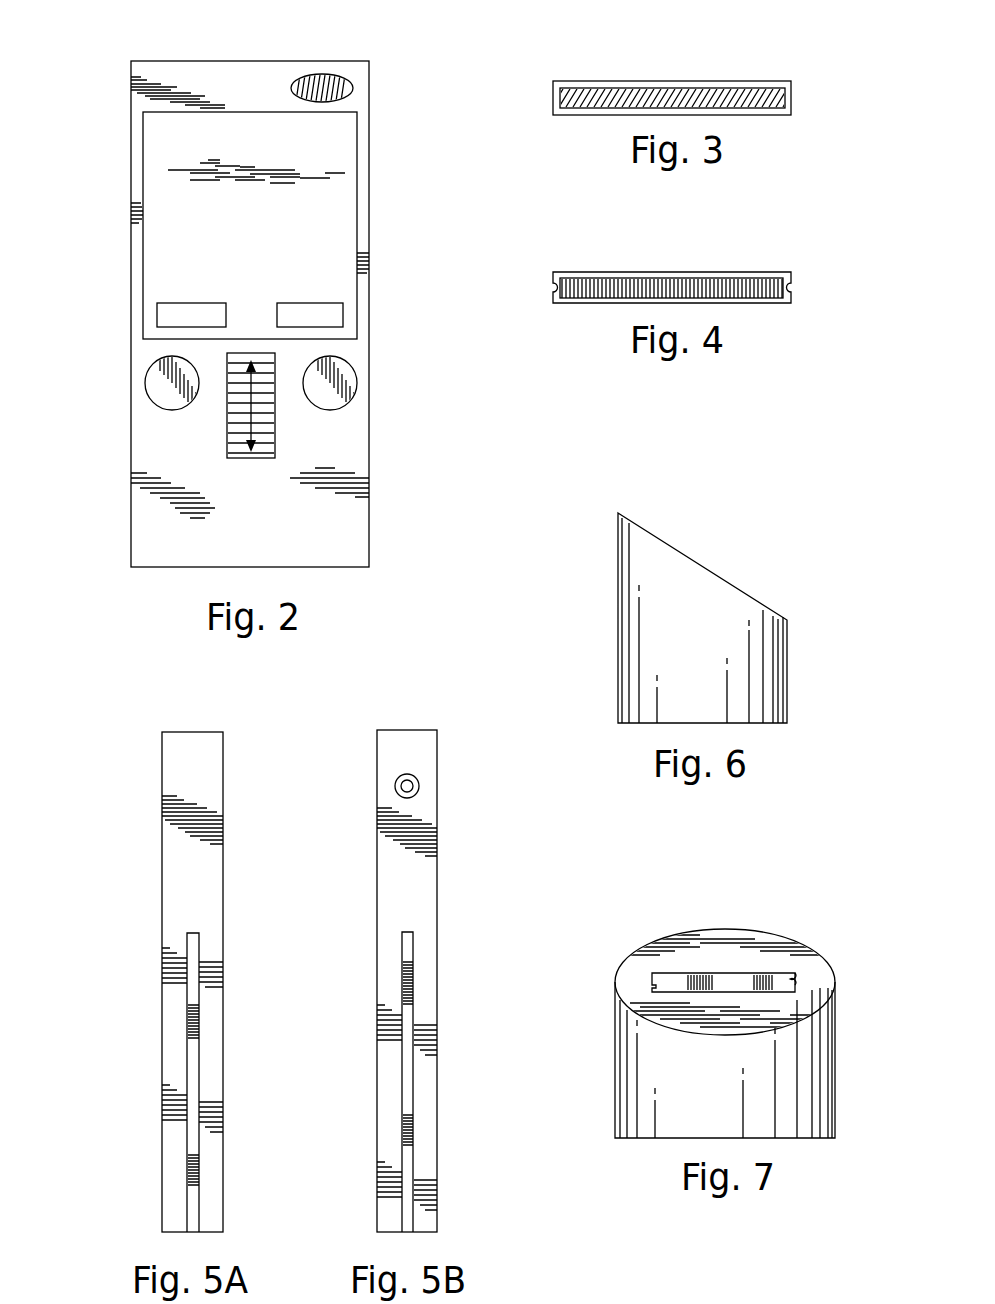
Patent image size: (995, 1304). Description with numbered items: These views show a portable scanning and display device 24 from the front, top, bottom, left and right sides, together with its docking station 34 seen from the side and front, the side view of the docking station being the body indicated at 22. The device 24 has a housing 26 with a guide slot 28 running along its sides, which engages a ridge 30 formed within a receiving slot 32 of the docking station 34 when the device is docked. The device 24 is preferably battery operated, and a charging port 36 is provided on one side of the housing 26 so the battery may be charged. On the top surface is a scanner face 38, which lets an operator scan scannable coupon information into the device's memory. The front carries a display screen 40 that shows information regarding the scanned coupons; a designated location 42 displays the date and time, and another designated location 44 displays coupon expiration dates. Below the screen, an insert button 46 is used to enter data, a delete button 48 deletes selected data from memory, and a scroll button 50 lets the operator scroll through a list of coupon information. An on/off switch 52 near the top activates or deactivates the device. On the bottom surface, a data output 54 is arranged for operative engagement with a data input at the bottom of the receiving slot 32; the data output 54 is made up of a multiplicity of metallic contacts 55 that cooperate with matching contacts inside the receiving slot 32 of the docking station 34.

In FIG. 6, the dosing chamber body 22 is at (723, 541).
In FIG. 2, the scanning and display device 24 is at (388, 66).
In FIG. 3, the scanning and display device 24 is at (600, 56).
In FIG. 4, the scanning and display device 24 is at (600, 244).
In FIG. 5A, the scanning and display device 24 is at (139, 965).
In FIG. 5B, the scanning and display device 24 is at (395, 964).
In FIG. 5A, the housing 26 is at (175, 867).
In FIG. 5B, the housing 26 is at (412, 892).
In FIG. 5A, the guide slot 28 is at (192, 1065).
In FIG. 5B, the guide slot 28 is at (408, 1087).
In FIG. 7, the ridge 30 is at (793, 972).
In FIG. 7, the receiving slot 32 is at (725, 980).
In FIG. 7, the docking station 34 is at (653, 908).
In FIG. 5B, the charging port 36 is at (419, 783).
In FIG. 3, the scanner face 38 is at (727, 97).
In FIG. 2, the display screen 40 is at (266, 235).
In FIG. 2, the designated location 42 is at (167, 317).
In FIG. 2, the designated location 44 is at (337, 316).
In FIG. 2, the insert button 46 is at (153, 385).
In FIG. 2, the delete button 48 is at (350, 373).
In FIG. 2, the scroll button 50 is at (275, 418).
In FIG. 2, the on/off switch 52 is at (297, 88).
In FIG. 4, the data output 54 is at (710, 278).
In FIG. 4, the metallic contacts 55 is at (747, 278).